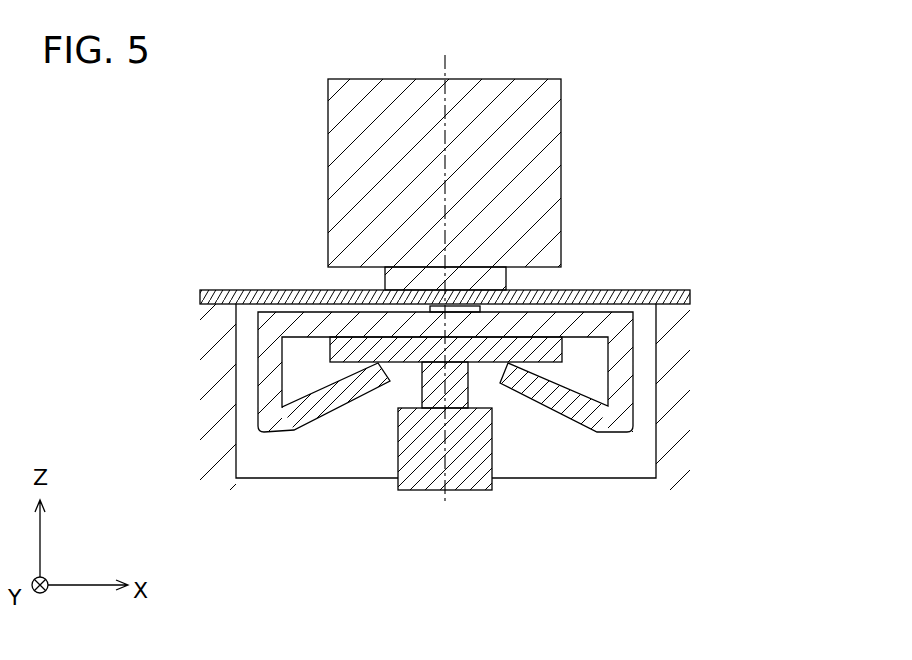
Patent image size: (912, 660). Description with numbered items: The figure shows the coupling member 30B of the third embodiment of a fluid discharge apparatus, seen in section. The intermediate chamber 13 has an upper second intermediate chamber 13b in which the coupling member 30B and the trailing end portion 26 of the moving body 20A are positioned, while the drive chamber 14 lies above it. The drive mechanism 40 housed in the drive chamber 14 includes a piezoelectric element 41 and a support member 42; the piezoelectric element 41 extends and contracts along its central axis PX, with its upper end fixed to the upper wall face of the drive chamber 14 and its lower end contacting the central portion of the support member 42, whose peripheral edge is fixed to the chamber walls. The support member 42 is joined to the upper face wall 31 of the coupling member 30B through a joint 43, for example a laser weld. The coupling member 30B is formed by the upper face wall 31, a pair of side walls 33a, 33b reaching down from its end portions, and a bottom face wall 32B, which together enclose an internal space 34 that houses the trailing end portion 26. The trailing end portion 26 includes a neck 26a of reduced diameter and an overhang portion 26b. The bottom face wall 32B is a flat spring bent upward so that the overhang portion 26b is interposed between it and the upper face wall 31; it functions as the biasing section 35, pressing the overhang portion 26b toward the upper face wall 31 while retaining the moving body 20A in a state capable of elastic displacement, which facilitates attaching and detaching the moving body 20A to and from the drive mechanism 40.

The drive chamber 14 is at (433, 186).
The drive mechanism 40 is at (433, 186).
The piezoelectric element 41 is at (328, 155).
The support member 42 is at (445, 263).
The joint 43 is at (462, 307).
The central axis of the piezoelectric element PX is at (448, 62).
The upper face wall 31 is at (532, 330).
The coupling member 30B is at (461, 398).
The side wall 33a is at (277, 390).
The side wall 33b is at (623, 383).
The bottom face wall 32B is at (461, 450).
The biasing section 35 is at (461, 450).
The internal space 34 is at (313, 385).
The second intermediate chamber 13b is at (328, 468).
The intermediate chamber 13 is at (445, 397).
The moving body 20A is at (472, 487).
The trailing end portion 26 is at (525, 475).
The neck 26a is at (482, 362).
The overhang portion 26b is at (464, 395).